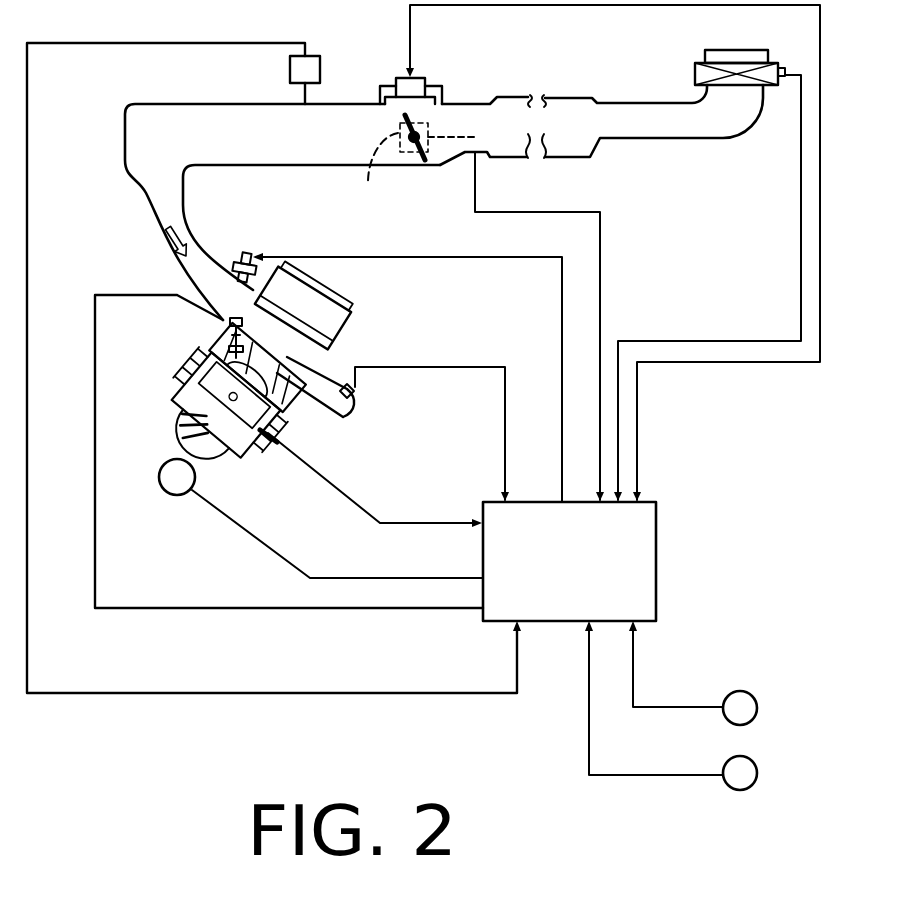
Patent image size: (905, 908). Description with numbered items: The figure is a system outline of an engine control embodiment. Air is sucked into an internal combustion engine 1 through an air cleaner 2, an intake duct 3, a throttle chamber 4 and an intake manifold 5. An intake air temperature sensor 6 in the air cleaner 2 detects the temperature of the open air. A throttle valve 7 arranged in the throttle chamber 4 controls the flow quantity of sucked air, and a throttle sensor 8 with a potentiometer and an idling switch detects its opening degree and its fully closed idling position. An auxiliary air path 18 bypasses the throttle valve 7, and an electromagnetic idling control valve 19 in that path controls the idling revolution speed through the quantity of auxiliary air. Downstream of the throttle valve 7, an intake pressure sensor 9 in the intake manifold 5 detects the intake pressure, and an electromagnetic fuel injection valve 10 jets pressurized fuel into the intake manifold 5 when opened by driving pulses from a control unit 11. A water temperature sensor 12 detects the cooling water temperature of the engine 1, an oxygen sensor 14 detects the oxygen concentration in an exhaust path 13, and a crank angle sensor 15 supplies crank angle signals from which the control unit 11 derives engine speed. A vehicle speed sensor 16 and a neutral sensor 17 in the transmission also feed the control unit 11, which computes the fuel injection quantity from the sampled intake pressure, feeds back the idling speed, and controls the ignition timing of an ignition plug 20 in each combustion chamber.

The internal combustion engine 1 is at (346, 355).
The air cleaner 2 is at (695, 75).
The intake duct 3 is at (730, 138).
The throttle chamber 4 is at (445, 166).
The intake manifold 5 is at (157, 247).
The intake air temperature sensor 6 is at (783, 68).
The throttle valve 7 is at (409, 166).
The throttle sensor 8 is at (346, 176).
The intake pressure sensor 9 is at (320, 68).
The fuel injection valve 10 is at (241, 252).
The control unit 11 is at (658, 525).
The water temperature sensor 12 is at (267, 448).
The exhaust path 13 is at (343, 413).
The oxygen sensor 14 is at (356, 392).
The crank angle sensor 15 is at (177, 496).
The vehicle speed sensor 16 is at (757, 698).
The neutral sensor 17 is at (757, 770).
The auxiliary air path 18 is at (442, 95).
The idling control valve 19 is at (425, 80).
The ignition plug 20 is at (229, 340).